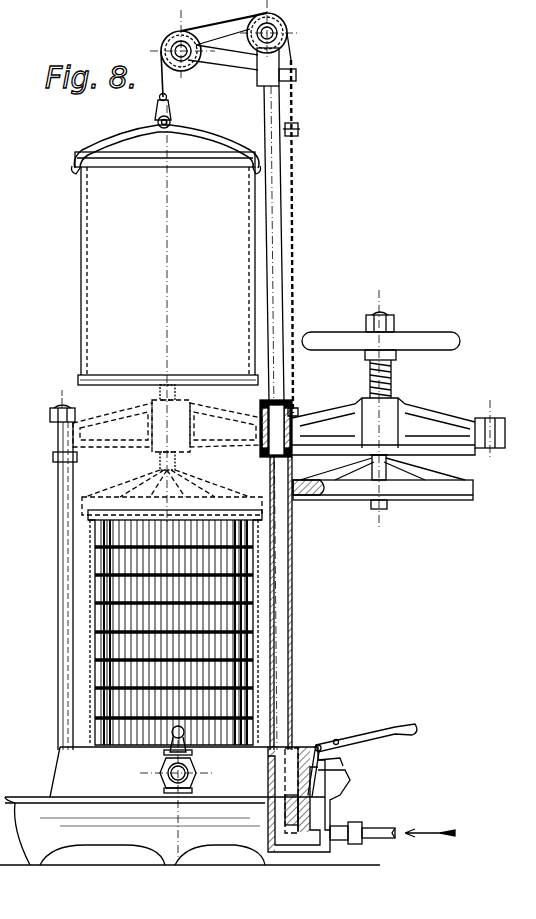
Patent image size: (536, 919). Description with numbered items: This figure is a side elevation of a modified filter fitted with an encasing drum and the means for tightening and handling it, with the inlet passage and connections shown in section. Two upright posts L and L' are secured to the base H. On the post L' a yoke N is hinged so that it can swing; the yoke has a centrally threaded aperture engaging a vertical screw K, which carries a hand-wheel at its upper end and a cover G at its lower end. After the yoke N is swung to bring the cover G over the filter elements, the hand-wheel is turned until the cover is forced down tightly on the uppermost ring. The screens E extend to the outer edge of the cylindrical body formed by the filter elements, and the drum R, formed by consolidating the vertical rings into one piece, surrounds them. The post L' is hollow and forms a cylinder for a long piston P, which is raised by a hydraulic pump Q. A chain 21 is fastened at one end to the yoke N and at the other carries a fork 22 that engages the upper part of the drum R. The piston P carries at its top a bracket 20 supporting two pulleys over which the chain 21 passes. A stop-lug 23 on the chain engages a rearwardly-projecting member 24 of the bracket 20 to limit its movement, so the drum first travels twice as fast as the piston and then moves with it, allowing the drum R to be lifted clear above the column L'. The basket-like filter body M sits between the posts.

The bracket 20 is at (224, 49).
The fork 22 is at (166, 112).
The rearwardly-projecting member 24 is at (296, 74).
The stop-lug 23 is at (298, 129).
The piston P is at (275, 240).
The chain 21 is at (304, 224).
The drum R is at (40, 577).
The vertical screw K is at (381, 355).
The yoke N is at (289, 448).
The cover G is at (393, 482).
The screens E is at (258, 576).
The upright post L' is at (298, 603).
The basket M is at (175, 627).
The upright post L is at (57, 570).
The base H is at (190, 795).
The hydraulic pump Q is at (361, 788).